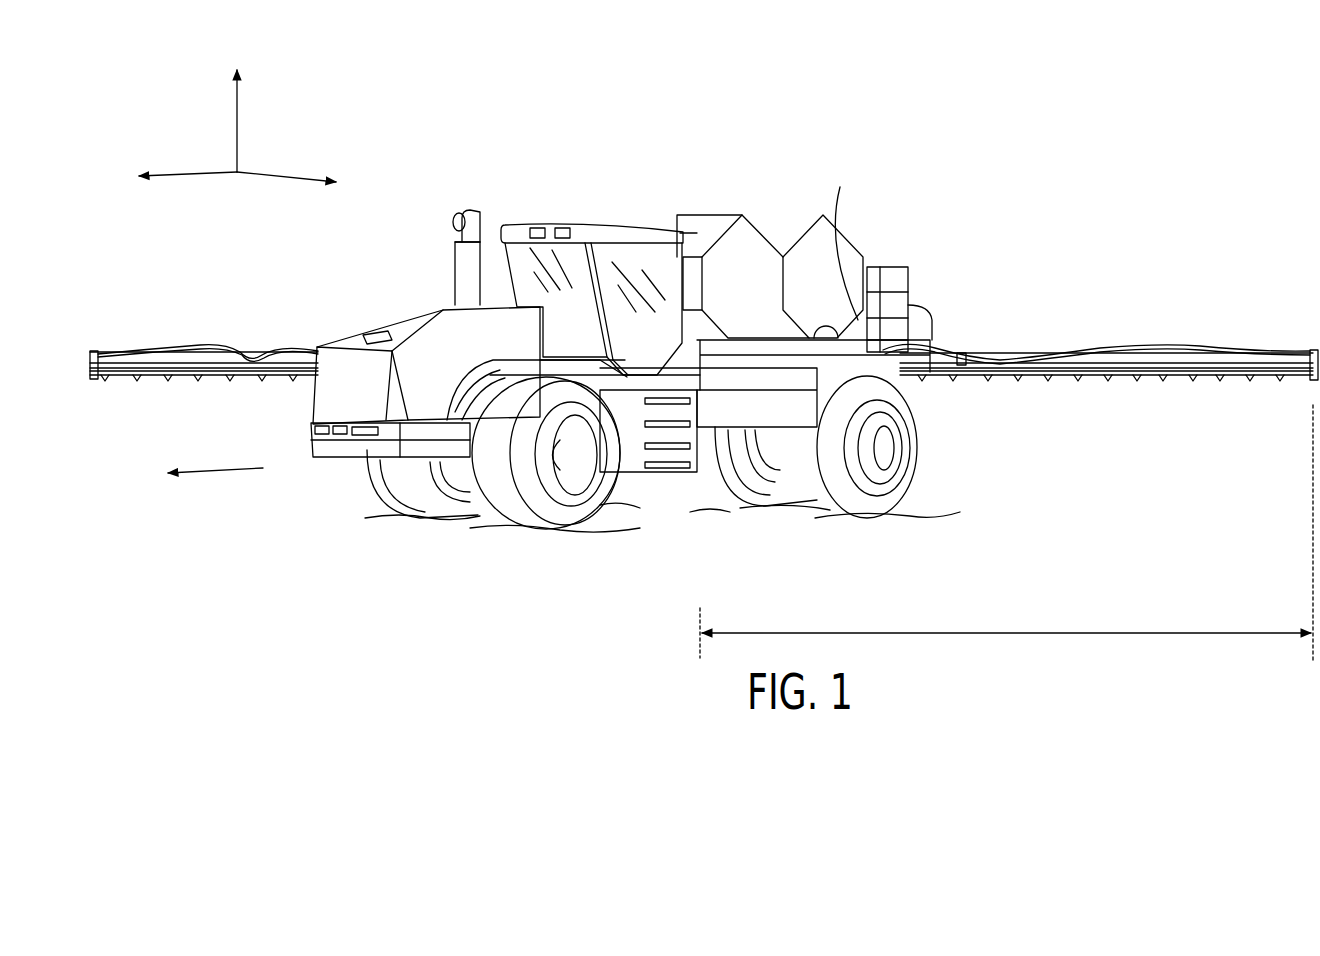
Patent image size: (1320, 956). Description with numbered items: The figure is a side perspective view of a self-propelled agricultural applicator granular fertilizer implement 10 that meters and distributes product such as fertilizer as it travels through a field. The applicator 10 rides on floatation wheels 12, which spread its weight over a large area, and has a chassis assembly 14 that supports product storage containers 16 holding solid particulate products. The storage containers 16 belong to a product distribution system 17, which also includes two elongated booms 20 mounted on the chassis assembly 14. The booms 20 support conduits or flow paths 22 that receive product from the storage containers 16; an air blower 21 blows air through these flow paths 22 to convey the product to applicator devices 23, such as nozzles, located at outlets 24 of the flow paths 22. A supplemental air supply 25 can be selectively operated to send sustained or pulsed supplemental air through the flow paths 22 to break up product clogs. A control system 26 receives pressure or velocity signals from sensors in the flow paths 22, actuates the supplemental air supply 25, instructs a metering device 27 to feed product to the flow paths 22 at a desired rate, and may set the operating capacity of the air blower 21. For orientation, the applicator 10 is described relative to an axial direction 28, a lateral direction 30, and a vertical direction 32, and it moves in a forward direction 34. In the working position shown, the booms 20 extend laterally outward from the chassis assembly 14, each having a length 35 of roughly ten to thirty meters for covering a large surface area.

The agricultural applicator granular fertilizer implement 10 is at (625, 163).
The wheels 12 is at (378, 487).
The chassis assembly 14 is at (787, 390).
The product storage containers 16 is at (808, 272).
The product distribution system 17 is at (1010, 262).
The booms 20 is at (704, 385).
The air blower 21 is at (857, 327).
The conduits/flow paths 22 is at (205, 348).
The applicator devices 23 is at (1014, 385).
The outlets 24 is at (172, 384).
The supplemental air supply 25 is at (843, 239).
The control system 26 is at (905, 278).
The metering device 27 is at (826, 345).
The axial axis or direction 28 is at (192, 170).
The lateral axis or direction 30 is at (283, 170).
The vertical axis or direction 32 is at (237, 122).
The forward direction 34 is at (220, 470).
The length 35 is at (1010, 633).